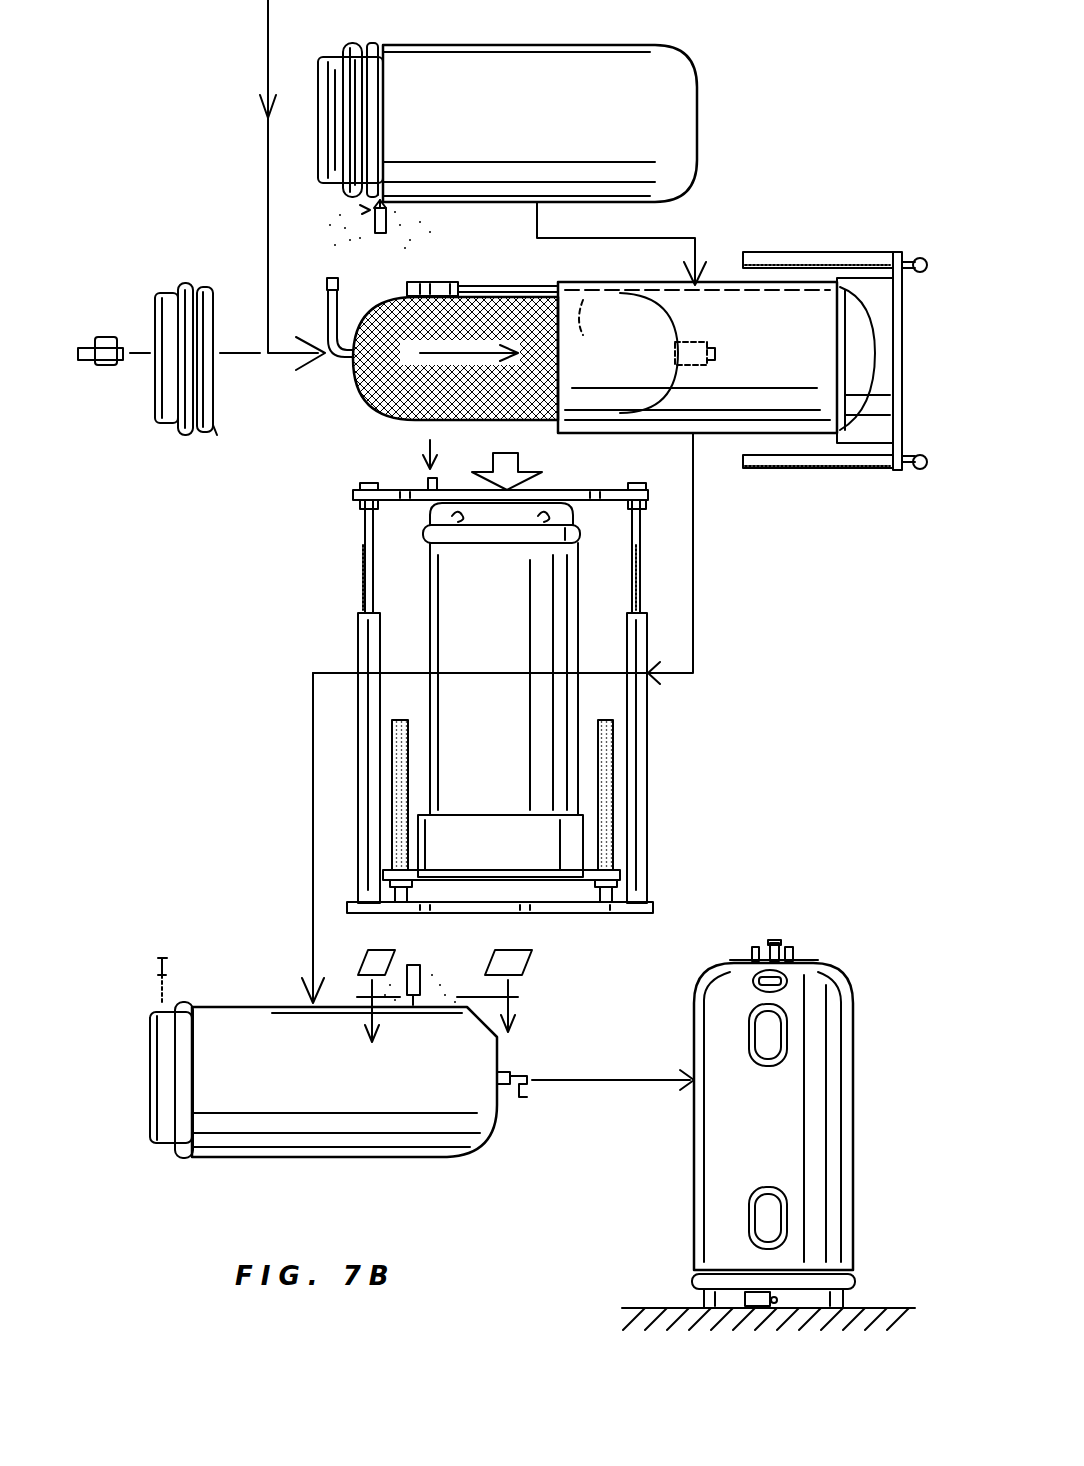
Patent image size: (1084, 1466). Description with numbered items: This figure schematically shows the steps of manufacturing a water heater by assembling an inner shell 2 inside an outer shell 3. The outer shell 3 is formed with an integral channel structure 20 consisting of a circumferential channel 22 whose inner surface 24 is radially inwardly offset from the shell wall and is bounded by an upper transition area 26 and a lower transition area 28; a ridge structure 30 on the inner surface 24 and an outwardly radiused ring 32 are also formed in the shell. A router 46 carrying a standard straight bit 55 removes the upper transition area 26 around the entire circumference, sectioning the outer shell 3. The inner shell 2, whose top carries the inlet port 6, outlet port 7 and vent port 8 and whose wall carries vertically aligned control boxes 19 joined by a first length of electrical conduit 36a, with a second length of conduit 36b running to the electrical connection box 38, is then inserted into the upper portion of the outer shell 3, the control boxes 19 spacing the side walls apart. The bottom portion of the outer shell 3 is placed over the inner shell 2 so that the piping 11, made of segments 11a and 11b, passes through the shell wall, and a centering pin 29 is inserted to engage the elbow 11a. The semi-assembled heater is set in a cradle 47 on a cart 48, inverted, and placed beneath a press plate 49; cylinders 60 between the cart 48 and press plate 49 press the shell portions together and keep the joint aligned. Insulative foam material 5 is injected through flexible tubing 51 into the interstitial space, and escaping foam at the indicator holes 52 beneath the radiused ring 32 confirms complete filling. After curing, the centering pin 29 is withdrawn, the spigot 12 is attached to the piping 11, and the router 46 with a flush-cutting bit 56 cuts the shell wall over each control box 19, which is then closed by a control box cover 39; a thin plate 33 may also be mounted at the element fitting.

The inner shell 2 is at (390, 420).
The outer shell 3 is at (693, 72).
The insulative foam material 5 is at (545, 520).
The inlet port 6 is at (757, 947).
The outlet port 7 is at (790, 945).
The vent port 8 is at (775, 943).
The piping 11 is at (314, 330).
The elbow 11a is at (337, 360).
The piping segment 11b is at (337, 307).
The spigot 12 is at (160, 953).
The control box 19 is at (407, 288).
The channel structure 20 is at (392, 38).
The circumferential channel 22 is at (407, 282).
The inner surface 24 is at (353, 216).
The upper transition area 26 is at (383, 53).
The lower transition area 28 is at (365, 42).
The centering pin 29 is at (105, 340).
The ridge structure 30 is at (385, 40).
The radiused ring 32 is at (357, 115).
The plate 33 is at (425, 540).
The first length of electrical conduit 36a is at (500, 287).
The second length of electrical conduit 36b is at (687, 297).
The electrical connection box 38 is at (788, 975).
The control box cover 39 is at (732, 1029).
The router 46 is at (388, 218).
The cradle 47 is at (860, 283).
The cart 48 is at (895, 470).
The press plate 49 is at (353, 495).
The flexible tubing 51 is at (435, 478).
The indicator holes 52 is at (528, 525).
The straight bit 55 is at (382, 197).
The flush-cutting bit 56 is at (427, 1010).
The cylinders 60 is at (817, 253).